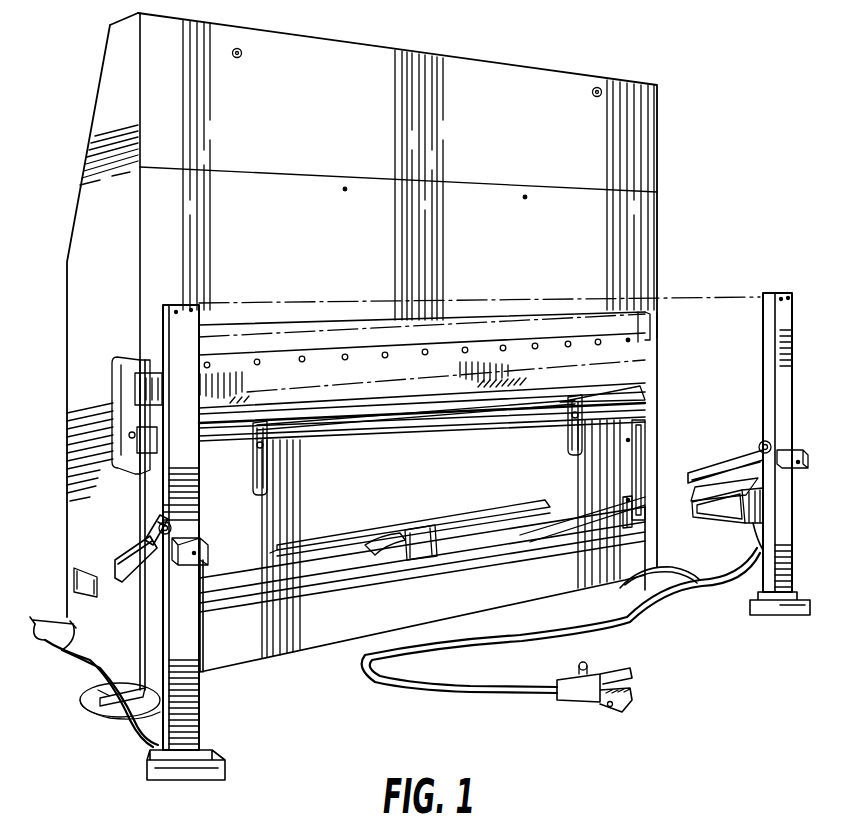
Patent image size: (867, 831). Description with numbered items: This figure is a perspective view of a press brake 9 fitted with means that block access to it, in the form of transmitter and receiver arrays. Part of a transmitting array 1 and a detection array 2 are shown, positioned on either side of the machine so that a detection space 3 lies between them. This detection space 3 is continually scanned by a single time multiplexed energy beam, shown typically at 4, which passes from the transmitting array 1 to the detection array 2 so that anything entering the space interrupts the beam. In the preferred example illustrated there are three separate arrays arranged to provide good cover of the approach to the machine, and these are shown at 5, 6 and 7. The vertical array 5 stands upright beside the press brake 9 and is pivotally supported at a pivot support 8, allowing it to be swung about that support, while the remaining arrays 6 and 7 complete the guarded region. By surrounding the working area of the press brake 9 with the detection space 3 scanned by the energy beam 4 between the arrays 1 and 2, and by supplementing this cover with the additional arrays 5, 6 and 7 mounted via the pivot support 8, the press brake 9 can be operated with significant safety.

The transmitting array 1 is at (758, 332).
The detection array 2 is at (199, 481).
The detection space 3 is at (494, 467).
The time multiplexed energy beam 4 is at (485, 313).
The vertical array 5 is at (189, 425).
The array 6 is at (763, 445).
The array 7 is at (130, 553).
The pivot support 8 is at (200, 526).
The press brake 9 is at (570, 87).